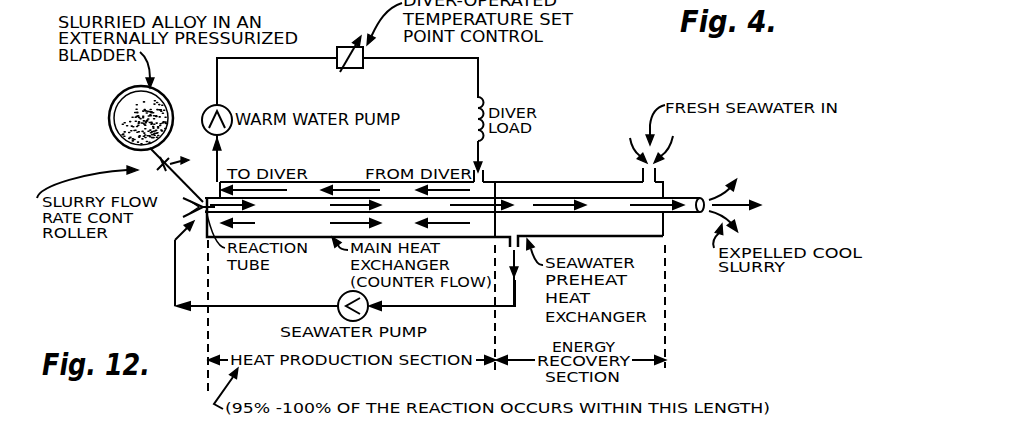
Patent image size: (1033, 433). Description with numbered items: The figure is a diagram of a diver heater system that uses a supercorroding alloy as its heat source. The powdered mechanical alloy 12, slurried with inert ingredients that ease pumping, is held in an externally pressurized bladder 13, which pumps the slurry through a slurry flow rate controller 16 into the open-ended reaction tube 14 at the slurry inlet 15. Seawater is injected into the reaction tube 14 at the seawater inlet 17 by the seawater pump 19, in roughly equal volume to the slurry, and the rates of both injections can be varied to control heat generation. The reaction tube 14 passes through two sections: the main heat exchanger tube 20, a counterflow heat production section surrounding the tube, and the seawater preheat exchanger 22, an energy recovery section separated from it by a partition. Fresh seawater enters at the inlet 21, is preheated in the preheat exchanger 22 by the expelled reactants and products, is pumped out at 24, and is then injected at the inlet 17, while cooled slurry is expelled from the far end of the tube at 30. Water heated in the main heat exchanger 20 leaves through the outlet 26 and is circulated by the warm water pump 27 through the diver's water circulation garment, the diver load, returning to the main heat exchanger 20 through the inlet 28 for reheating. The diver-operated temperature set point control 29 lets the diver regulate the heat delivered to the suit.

The powdered mechanical alloy 12 is at (115, 142).
The externally pressurized bladder 13 is at (115, 98).
The reaction tube 14 is at (220, 203).
The slurry inlet 15 is at (186, 212).
The slurry flow rate controller 16 is at (166, 166).
The seawater inlet 17 is at (205, 238).
The seawater pump 19 is at (340, 298).
The main heat exchanger tube 20 is at (317, 193).
The seawater inlet 21 is at (643, 180).
The seawater preheat exchanger 22 is at (640, 236).
The preheated seawater outlet 24 is at (509, 246).
The outlet 26 is at (222, 178).
The warm water pump 27 is at (232, 112).
The inlet 28 is at (486, 181).
The diver-operated temperature set point control 29 is at (346, 47).
The expelled cool slurry outlet 30 is at (689, 198).